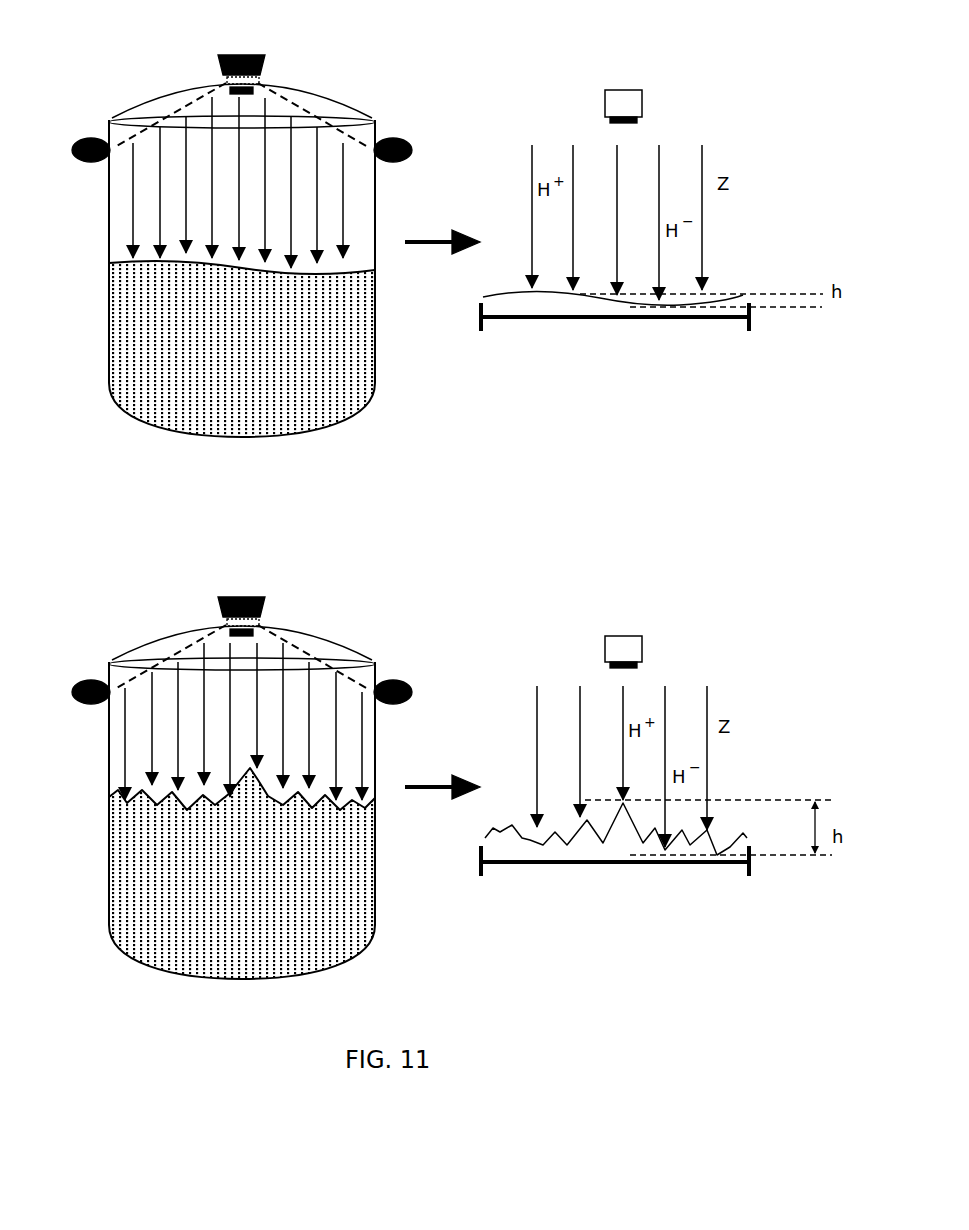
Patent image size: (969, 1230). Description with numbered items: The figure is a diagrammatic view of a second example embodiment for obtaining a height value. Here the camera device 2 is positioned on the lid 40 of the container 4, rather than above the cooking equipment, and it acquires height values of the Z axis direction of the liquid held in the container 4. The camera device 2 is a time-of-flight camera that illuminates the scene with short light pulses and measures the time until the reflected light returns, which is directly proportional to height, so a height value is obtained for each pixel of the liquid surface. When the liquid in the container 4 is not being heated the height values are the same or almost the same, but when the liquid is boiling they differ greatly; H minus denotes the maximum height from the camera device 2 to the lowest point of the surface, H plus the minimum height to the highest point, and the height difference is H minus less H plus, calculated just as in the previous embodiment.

The camera device 2 is at (270, 77).
The container 4 is at (106, 239).
The lid 40 is at (172, 86).